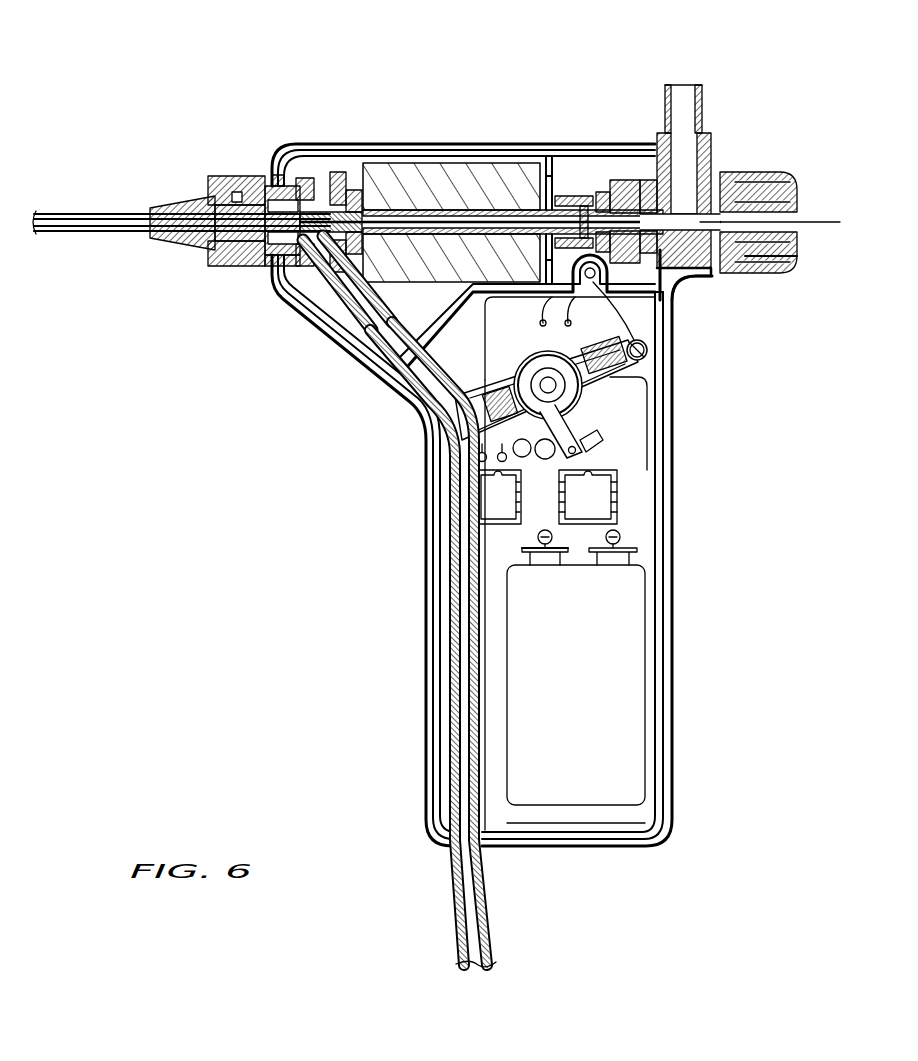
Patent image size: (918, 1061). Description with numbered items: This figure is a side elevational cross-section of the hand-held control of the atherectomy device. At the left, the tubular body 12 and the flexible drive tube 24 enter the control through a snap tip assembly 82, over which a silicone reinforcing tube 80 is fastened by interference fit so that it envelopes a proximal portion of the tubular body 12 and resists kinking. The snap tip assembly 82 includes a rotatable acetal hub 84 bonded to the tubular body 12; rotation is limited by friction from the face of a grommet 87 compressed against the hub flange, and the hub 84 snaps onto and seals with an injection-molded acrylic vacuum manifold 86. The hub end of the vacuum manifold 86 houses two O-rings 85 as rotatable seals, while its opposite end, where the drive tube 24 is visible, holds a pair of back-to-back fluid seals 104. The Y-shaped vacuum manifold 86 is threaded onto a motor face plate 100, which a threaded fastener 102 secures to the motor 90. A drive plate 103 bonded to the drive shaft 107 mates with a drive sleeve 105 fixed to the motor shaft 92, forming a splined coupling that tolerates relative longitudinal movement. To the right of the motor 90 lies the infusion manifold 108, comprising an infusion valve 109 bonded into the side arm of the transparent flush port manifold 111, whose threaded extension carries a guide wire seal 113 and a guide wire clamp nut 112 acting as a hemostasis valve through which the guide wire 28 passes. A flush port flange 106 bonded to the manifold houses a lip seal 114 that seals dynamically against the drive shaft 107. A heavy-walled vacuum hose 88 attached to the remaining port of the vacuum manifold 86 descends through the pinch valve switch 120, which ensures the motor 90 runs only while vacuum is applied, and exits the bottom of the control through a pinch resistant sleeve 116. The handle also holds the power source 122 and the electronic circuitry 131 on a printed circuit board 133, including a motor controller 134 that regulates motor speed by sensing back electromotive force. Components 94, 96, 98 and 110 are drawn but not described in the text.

The tubular body 12 is at (52, 210).
The flexible drive tube 24 is at (52, 234).
The guide wire 28 is at (808, 222).
The reinforcing tube 80 is at (100, 210).
The snap tip assembly 82 is at (208, 164).
The hub 84 is at (205, 203).
The O-rings 85 is at (265, 262).
The vacuum manifold 86 is at (305, 180).
The grommet 87 is at (274, 176).
The vacuum hose 88 is at (362, 362).
The motor 90 is at (430, 162).
The motor shaft 92 is at (496, 210).
The coupling sleeve 94 is at (620, 214).
The mounting plate 96 is at (551, 196).
The front bearing 98 is at (342, 176).
The motor face plate 100 is at (356, 194).
The threaded fastener 102 is at (346, 214).
The drive plate 103 is at (612, 186).
The fluid seals 104 is at (300, 302).
The drive sleeve 105 is at (650, 362).
The flush port flange 106 is at (648, 344).
The drive shaft 107 is at (560, 196).
The infusion manifold 108 is at (714, 168).
The infusion valve 109 is at (700, 134).
The housing wall 110 is at (662, 300).
The flush port manifold 111 is at (700, 270).
The guide wire clamp nut 112 is at (758, 174).
The guide wire seal 113 is at (792, 270).
The lip seal 114 is at (648, 186).
The pinch resistant sleeve 116 is at (448, 854).
The pinch valve switch 120 is at (612, 398).
The power source 122 is at (605, 685).
The electronic circuitry 131 is at (622, 462).
The printed circuit board 133 is at (640, 528).
The motor controller 134 is at (612, 494).